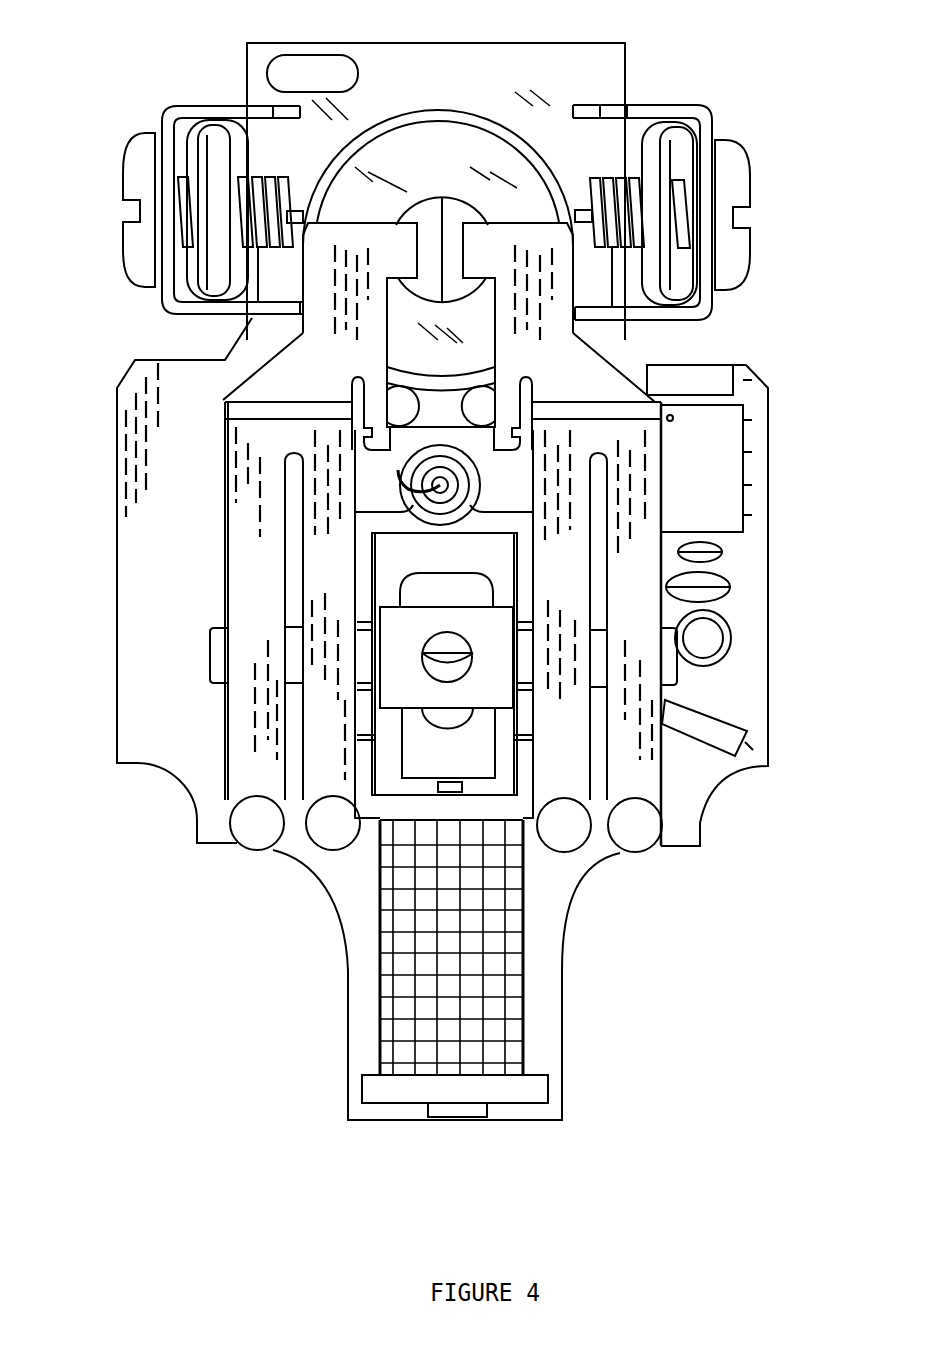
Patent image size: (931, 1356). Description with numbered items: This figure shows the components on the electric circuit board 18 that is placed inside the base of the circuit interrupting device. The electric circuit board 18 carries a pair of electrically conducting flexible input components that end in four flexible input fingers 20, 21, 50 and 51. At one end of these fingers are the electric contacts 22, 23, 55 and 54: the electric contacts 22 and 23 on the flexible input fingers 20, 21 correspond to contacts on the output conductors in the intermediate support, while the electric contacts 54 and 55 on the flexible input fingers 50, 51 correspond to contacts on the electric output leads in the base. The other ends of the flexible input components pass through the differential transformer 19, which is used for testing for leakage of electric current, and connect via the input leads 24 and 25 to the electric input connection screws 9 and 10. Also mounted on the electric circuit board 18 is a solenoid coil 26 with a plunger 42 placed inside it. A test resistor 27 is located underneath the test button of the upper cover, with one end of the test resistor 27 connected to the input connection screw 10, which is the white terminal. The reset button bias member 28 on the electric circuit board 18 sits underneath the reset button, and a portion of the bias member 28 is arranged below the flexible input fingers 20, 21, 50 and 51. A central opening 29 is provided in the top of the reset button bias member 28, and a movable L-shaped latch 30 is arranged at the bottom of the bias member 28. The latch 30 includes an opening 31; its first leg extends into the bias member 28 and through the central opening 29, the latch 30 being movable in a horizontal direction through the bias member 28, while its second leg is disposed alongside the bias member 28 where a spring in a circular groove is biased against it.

The electric input connection screw 9 is at (130, 212).
The electric input connection screw 10 is at (757, 228).
The electric circuit board 18 is at (748, 584).
The differential transformer 19 is at (443, 140).
The flexible input finger 20 is at (648, 563).
The flexible input finger 21 is at (272, 579).
The electric contact 22 is at (638, 842).
The electric contact 23 is at (257, 838).
The input lead 24 is at (688, 114).
The input lead 25 is at (178, 112).
The solenoid coil 26 is at (518, 1048).
The test resistor 27 is at (398, 490).
The reset button bias member 28 is at (407, 657).
The central opening 29 is at (443, 675).
The L-shaped latch 30 is at (468, 770).
The opening 31 is at (450, 647).
The plunger 42 is at (447, 1113).
The flexible input finger 50 is at (577, 563).
The flexible input finger 51 is at (342, 577).
The electric contact 54 is at (333, 840).
The electric contact 55 is at (560, 843).